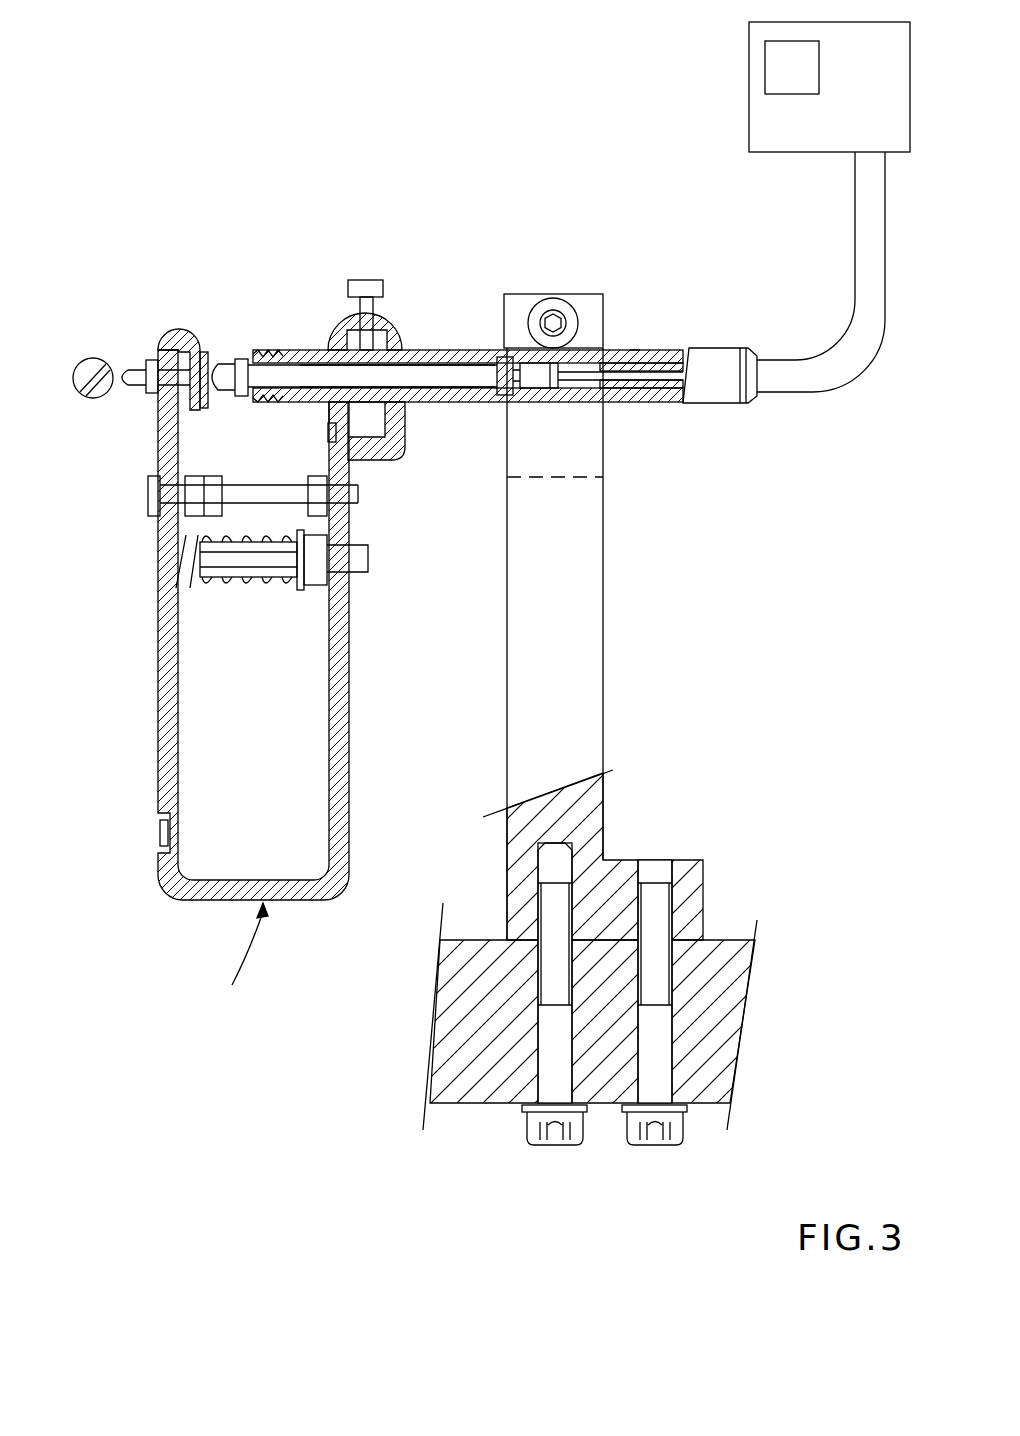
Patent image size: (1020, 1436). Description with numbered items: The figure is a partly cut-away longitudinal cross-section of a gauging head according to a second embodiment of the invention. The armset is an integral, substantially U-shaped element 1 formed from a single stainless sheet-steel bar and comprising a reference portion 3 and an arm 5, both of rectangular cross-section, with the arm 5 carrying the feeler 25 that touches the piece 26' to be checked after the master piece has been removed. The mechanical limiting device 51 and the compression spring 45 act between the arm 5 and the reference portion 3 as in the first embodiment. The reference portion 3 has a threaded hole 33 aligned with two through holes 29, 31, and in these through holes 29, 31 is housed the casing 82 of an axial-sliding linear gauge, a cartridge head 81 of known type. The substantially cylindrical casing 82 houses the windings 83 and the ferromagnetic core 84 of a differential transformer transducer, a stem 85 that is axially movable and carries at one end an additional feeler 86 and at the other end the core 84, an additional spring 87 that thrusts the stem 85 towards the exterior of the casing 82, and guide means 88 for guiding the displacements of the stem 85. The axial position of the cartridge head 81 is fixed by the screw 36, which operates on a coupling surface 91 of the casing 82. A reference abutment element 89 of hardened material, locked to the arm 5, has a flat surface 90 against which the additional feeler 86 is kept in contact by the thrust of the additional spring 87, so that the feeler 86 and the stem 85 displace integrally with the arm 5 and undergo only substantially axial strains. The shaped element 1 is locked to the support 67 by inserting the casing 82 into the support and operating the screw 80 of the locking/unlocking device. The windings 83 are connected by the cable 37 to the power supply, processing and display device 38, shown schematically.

The U-shaped element 1 is at (244, 957).
The reference portion 3 is at (337, 752).
The arm 5 is at (167, 730).
The feeler 25 is at (150, 396).
The piece to be checked 26' is at (85, 297).
The through hole 29 is at (388, 432).
The through hole 31 is at (385, 410).
The threaded hole 33 is at (378, 352).
The screw 36 is at (356, 280).
The cable 37 is at (860, 210).
The power supply, processing and display device 38 is at (752, 133).
The compression spring 45 is at (180, 545).
The mechanical limiting device 51 is at (148, 500).
The support 67 is at (595, 442).
The screw 80 is at (521, 300).
The cartridge head 81 is at (712, 372).
The casing 82 is at (425, 366).
The windings 83 is at (670, 372).
The ferromagnetic core 84 is at (587, 371).
The stem 85 is at (548, 365).
The additional feeler 86 is at (244, 358).
The additional spring 87 is at (502, 362).
The guide means 88 is at (313, 357).
The reference abutment element 89 is at (199, 345).
The flat surface 90 is at (210, 350).
The coupling surface 91 is at (636, 350).